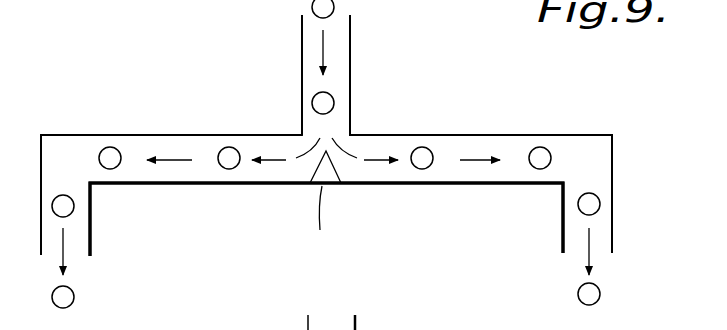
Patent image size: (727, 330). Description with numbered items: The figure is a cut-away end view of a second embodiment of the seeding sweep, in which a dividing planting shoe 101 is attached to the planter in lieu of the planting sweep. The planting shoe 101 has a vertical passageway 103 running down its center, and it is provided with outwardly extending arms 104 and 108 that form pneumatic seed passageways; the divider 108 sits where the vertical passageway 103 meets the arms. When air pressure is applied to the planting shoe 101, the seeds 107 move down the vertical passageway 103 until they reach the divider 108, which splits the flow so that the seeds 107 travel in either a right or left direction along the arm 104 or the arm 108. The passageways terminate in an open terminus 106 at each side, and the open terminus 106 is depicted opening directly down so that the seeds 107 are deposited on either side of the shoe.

The planting shoe 101 is at (403, 90).
The vertical passageway 103 is at (300, 93).
The outwardly extending arm 104 is at (137, 135).
The open terminus 106 is at (560, 210).
The seeds 107 is at (332, 11).
The divider 108 is at (535, 135).